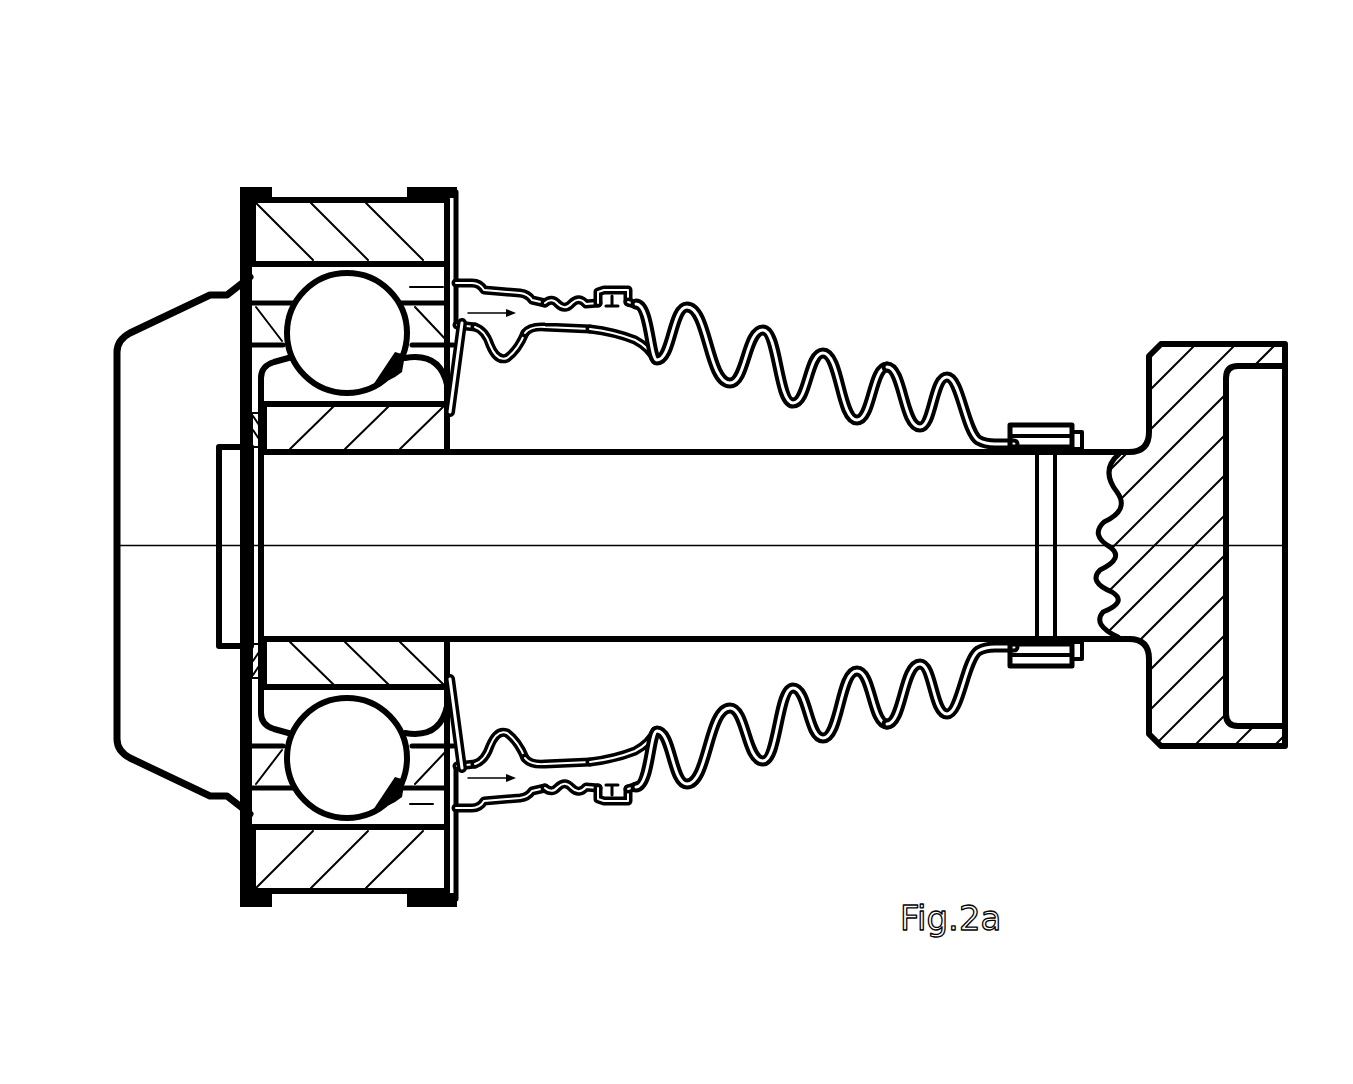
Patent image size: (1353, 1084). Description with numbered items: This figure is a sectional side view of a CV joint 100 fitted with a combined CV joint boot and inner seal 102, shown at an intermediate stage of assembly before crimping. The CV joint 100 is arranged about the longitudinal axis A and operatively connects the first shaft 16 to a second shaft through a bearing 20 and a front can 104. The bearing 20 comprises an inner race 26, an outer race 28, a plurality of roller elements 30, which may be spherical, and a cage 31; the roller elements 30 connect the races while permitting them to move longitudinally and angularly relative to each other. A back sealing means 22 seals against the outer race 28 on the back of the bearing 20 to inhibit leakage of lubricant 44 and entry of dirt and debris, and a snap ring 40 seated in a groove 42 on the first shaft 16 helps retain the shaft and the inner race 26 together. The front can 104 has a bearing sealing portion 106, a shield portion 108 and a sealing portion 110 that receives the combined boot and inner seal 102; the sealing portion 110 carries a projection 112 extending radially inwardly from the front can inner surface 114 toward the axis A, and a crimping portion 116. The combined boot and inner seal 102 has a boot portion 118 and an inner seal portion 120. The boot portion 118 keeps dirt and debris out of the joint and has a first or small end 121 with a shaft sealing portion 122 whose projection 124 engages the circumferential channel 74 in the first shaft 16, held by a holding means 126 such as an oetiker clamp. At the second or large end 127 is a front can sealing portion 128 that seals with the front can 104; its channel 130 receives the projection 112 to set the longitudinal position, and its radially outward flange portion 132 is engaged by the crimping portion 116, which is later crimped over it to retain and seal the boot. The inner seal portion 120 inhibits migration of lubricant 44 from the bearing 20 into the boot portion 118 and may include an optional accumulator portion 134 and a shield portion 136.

The first shaft 16 is at (963, 703).
The bearing 20 is at (293, 190).
The back sealing means 22 is at (128, 758).
The inner race 26 is at (263, 387).
The outer race 28 is at (335, 198).
The roller elements 30 is at (280, 348).
The cage 31 is at (243, 315).
The snap ring 40 is at (240, 430).
The groove 42 is at (250, 492).
The lubricant 44 is at (410, 287).
The circumferential channel 74 is at (1047, 523).
The CV joint 100 is at (556, 152).
The combined CV joint boot and inner seal 102 is at (836, 350).
The front can 104 is at (452, 188).
The bearing sealing portion 106 is at (458, 217).
The shield portion 108 is at (473, 280).
The sealing portion 110 is at (540, 303).
The projection 112 is at (587, 332).
The front can inner surface 114 is at (547, 336).
The crimping portion 116 is at (632, 292).
The boot portion 118 is at (913, 385).
The inner seal portion 120 is at (522, 335).
The first or small end 121 is at (1081, 421).
The shaft sealing portion 122 is at (1013, 437).
The projection 124 is at (1050, 455).
The holding means 126 is at (1037, 428).
The second or large end 127 is at (649, 293).
The front can sealing portion 128 is at (677, 337).
The channel 130 is at (560, 290).
The flange portion 132 is at (633, 305).
The accumulator portion 134 is at (560, 367).
The shield portion 136 is at (467, 380).
The longitudinal axis A is at (1262, 547).